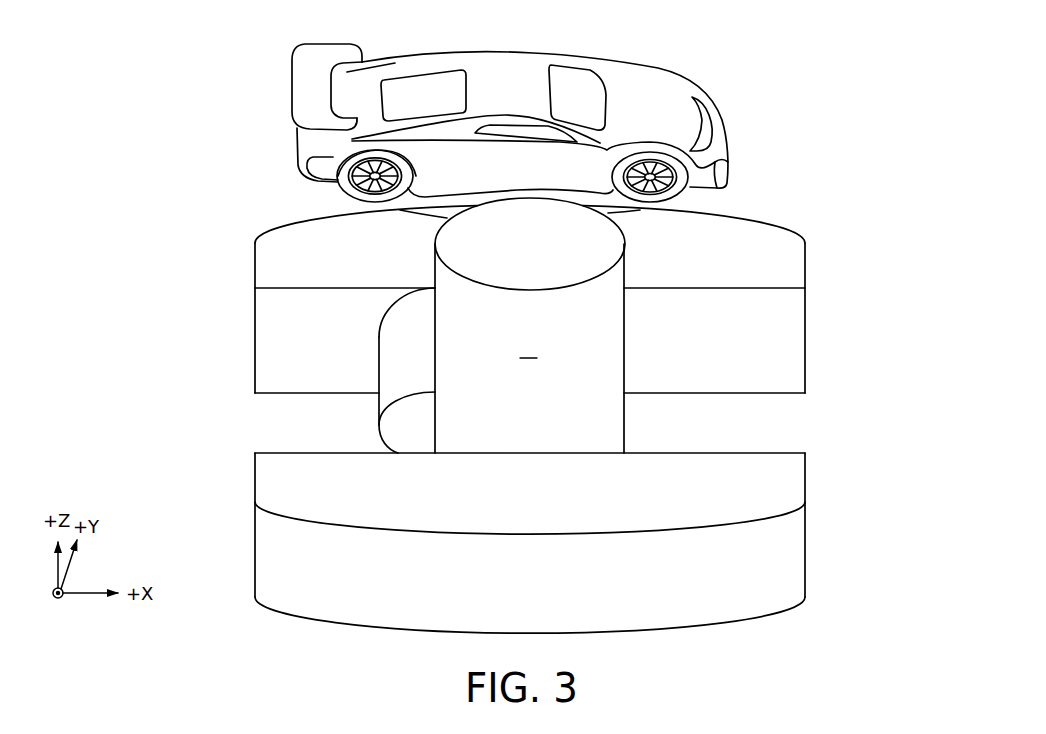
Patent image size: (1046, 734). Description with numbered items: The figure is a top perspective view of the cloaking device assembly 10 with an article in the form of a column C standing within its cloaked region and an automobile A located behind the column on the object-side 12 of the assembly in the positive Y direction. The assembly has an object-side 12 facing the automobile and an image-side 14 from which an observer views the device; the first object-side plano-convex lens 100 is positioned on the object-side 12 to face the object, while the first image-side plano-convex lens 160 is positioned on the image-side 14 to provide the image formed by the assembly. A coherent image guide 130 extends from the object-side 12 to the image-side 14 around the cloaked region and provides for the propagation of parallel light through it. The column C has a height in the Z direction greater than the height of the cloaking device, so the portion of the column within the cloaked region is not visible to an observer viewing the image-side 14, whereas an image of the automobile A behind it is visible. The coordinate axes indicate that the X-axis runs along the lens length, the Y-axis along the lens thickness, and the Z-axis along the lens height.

The cloaking device assembly 10 is at (599, 361).
The object-side 12 is at (574, 131).
The first object-side plano-convex lens 100 is at (598, 325).
The coherent image guide 130 is at (339, 370).
The first image-side plano-convex lens 160 is at (605, 566).
The image-side 14 is at (574, 638).